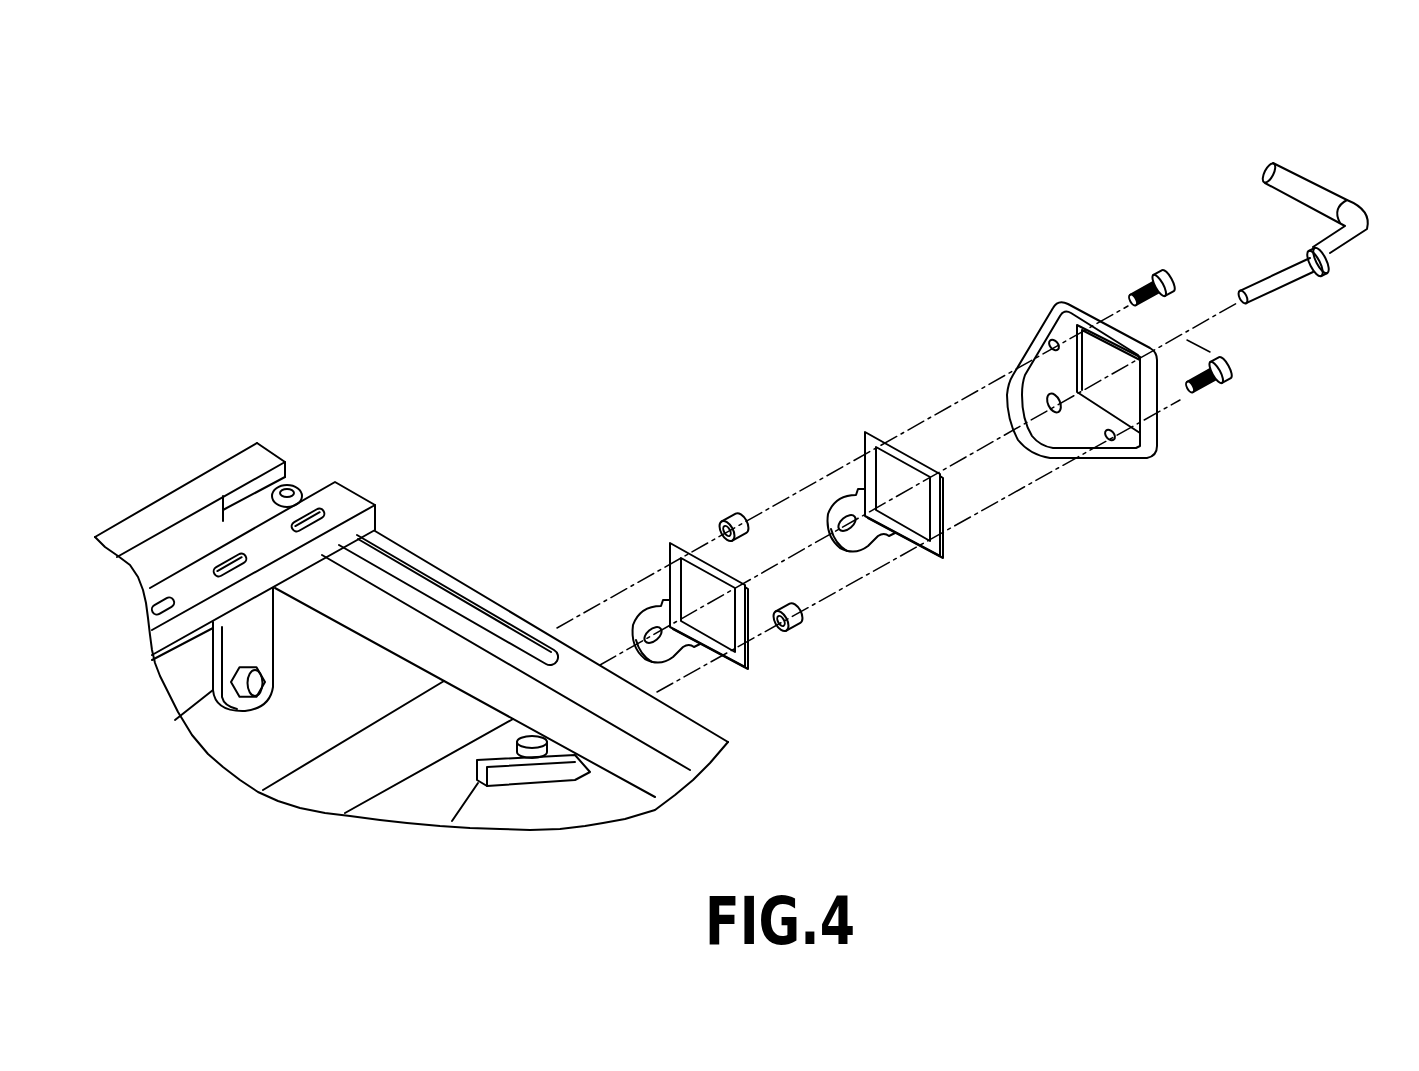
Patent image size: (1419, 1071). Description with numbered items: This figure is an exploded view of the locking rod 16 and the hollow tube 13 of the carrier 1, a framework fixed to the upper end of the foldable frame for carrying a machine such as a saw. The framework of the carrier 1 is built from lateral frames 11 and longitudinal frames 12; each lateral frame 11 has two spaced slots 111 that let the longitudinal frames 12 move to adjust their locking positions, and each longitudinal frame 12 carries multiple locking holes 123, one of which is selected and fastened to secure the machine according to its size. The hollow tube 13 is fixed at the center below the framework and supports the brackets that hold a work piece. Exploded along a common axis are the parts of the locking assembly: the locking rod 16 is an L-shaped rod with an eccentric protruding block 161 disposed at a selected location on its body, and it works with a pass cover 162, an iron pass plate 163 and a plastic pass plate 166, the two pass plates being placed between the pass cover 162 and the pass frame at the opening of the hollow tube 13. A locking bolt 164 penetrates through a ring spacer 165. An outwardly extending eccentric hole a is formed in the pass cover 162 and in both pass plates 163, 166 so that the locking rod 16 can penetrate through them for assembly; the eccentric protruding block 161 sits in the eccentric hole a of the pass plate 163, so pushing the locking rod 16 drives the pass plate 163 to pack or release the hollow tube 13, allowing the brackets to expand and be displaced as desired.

The carrier 1 is at (253, 432).
The lateral frame 11 is at (703, 752).
The slot 111 is at (403, 575).
The longitudinal frame 12 is at (340, 500).
The locking hole 123 is at (230, 563).
The hollow tube 13 is at (392, 732).
The locking rod 16 is at (1293, 177).
The eccentric protruding block 161 is at (1326, 272).
The pass cover 162 is at (1068, 302).
The pass plate 163 is at (686, 542).
The locking bolt 164 is at (1162, 272).
The ring spacer 165 is at (734, 517).
The pass plate 166 is at (872, 433).
The eccentric hole a is at (647, 627).